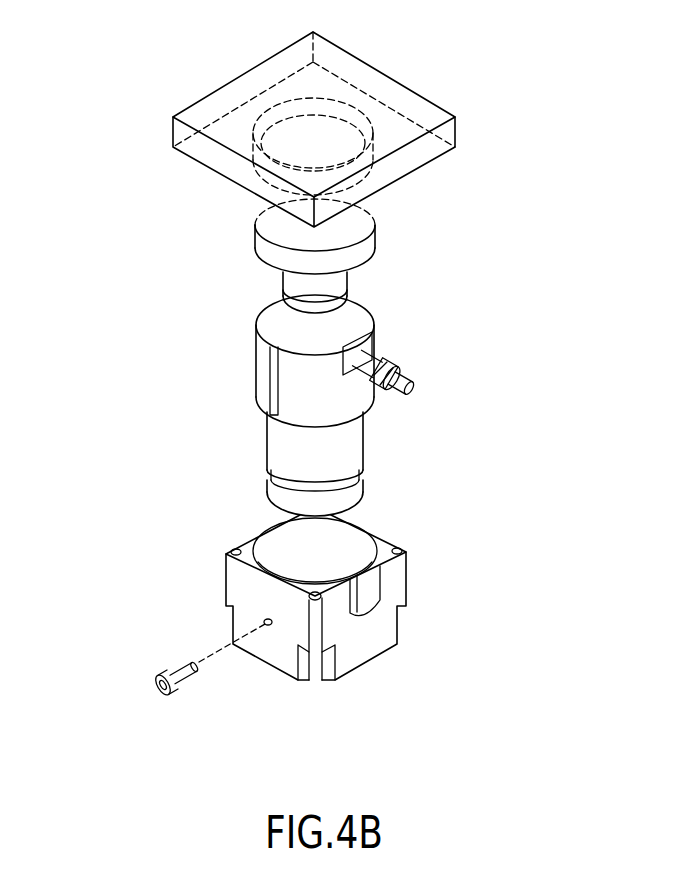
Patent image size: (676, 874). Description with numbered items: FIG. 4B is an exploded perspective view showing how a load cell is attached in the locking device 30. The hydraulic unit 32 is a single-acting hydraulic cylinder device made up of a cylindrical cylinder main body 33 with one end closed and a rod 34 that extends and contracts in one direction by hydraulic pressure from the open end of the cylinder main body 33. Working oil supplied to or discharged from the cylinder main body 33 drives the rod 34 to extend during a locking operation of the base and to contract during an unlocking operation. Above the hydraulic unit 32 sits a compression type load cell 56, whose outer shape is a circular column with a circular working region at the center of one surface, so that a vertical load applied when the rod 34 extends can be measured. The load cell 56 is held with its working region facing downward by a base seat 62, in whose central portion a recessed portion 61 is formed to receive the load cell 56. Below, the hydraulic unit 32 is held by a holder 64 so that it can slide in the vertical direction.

The locking device 30 is at (184, 438).
The hydraulic unit 32 is at (464, 396).
The cylinder main body 33 is at (372, 312).
The rod 34 is at (358, 443).
The load cell 56 is at (367, 248).
The recessed portion 61 is at (352, 98).
The base seat 62 is at (232, 80).
The holder 64 is at (383, 630).